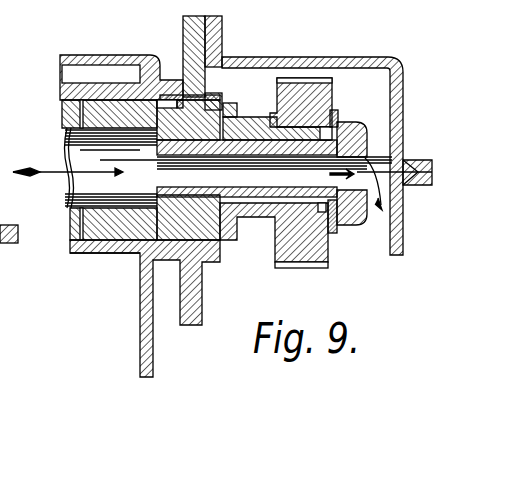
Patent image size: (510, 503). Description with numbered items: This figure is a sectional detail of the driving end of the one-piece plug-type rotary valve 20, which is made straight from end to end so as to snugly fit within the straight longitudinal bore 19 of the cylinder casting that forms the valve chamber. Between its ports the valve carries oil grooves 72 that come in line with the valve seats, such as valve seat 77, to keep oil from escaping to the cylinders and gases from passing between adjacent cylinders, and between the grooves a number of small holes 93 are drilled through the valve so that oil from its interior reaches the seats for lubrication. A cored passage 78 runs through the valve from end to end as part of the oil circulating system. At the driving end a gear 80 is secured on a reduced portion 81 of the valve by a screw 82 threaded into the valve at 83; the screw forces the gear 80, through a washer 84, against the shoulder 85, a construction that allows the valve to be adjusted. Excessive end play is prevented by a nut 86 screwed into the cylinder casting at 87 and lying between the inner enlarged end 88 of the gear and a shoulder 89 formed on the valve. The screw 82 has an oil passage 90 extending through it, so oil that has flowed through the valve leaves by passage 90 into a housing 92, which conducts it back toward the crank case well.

The bore 19 is at (130, 252).
The valve 20 is at (133, 223).
The oil grooves 72 is at (118, 97).
The valve seat 77 is at (97, 252).
The cored passage 78 is at (97, 155).
The gear 80 is at (307, 88).
The reduced portion 81 is at (260, 137).
The screw 82 is at (353, 138).
The threaded portion 83 is at (207, 195).
The washer 84 is at (333, 232).
The shoulder 85 is at (207, 207).
The nut 86 is at (215, 93).
The threaded portion of cylinder casting 87 is at (182, 95).
The inner enlarged end 88 is at (230, 107).
The shoulder 89 is at (177, 107).
The oil passage 90 is at (363, 163).
The housing 92 is at (399, 217).
The small holes 93 is at (68, 117).